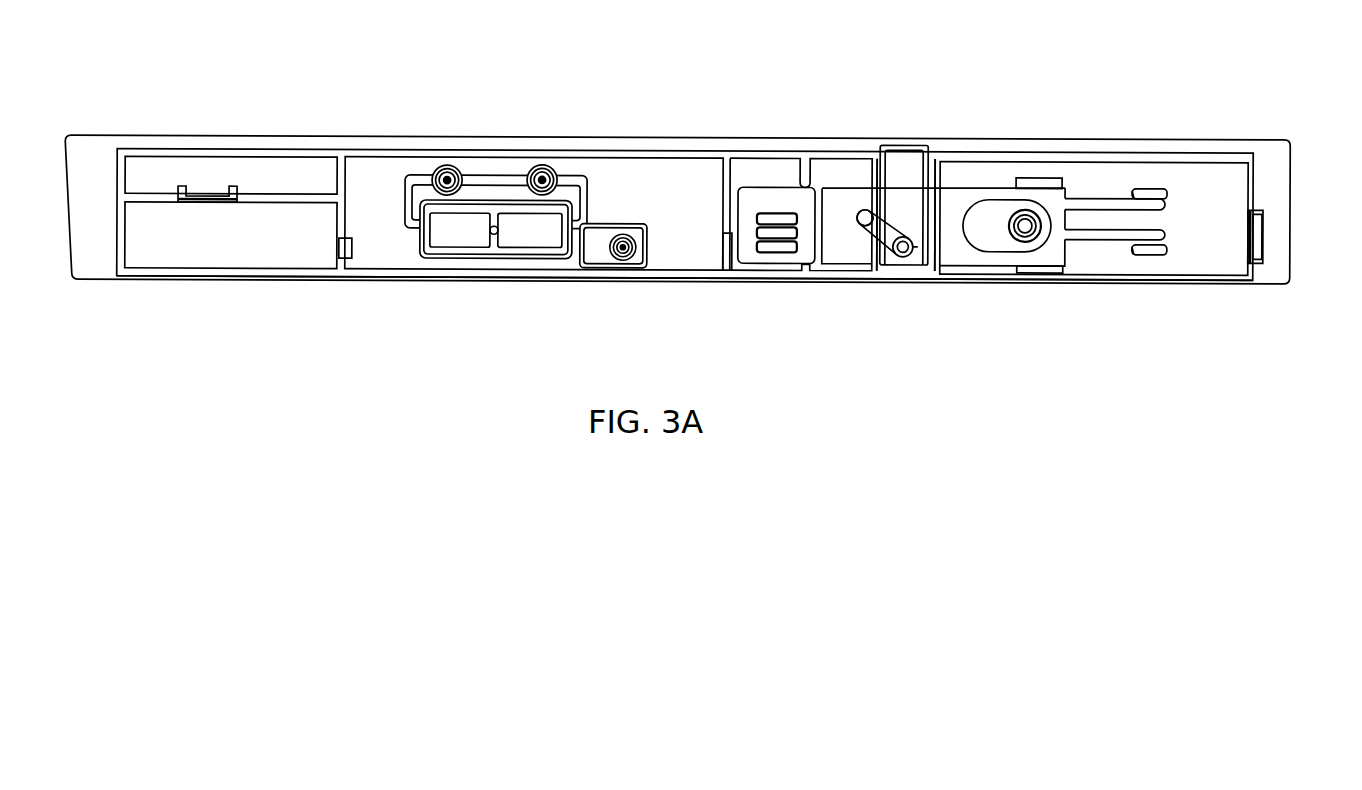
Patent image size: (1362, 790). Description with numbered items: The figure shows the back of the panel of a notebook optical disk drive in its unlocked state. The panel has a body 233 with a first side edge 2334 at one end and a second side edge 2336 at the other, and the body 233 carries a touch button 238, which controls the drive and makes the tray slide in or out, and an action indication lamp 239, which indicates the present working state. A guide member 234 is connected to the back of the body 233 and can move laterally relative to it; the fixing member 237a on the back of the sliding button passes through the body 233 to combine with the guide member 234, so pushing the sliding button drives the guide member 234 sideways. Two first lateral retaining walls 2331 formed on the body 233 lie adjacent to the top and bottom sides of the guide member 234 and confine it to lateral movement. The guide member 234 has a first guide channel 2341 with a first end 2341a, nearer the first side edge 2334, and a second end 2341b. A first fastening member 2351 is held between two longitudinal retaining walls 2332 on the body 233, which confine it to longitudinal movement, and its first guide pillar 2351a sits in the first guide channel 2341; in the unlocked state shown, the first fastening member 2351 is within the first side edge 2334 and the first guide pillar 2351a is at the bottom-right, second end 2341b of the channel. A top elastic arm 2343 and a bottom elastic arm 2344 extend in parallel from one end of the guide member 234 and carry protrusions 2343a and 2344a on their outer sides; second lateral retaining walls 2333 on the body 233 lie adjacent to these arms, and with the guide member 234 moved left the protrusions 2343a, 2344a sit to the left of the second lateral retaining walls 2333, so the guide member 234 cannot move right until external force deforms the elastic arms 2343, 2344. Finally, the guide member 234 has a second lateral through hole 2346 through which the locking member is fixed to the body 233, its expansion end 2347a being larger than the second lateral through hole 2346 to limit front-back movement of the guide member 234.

The body 233 is at (93, 144).
The first side edge 2334 is at (529, 126).
The second side edge 2336 is at (389, 303).
The guide member 234 is at (760, 194).
The fixing member 237a is at (773, 252).
The touch button 238 is at (459, 240).
The action indication lamp 239 is at (604, 256).
The first guide channel 2341 is at (859, 225).
The first end 2341a is at (866, 212).
The second end 2341b is at (904, 256).
The longitudinal retaining walls 2332 is at (877, 158).
The first fastening member 2351 is at (917, 156).
The first guide pillar 2351a is at (917, 245).
The first lateral retaining walls 2331 is at (1043, 180).
The second lateral through hole 2346 is at (1007, 251).
The expansion end 2347a is at (1028, 246).
The top elastic arm 2343 is at (1165, 198).
The bottom elastic arm 2344 is at (1165, 233).
The protrusion 2343a is at (1133, 188).
The protrusion 2344a is at (1141, 255).
The second lateral retaining walls 2333 is at (1157, 186).